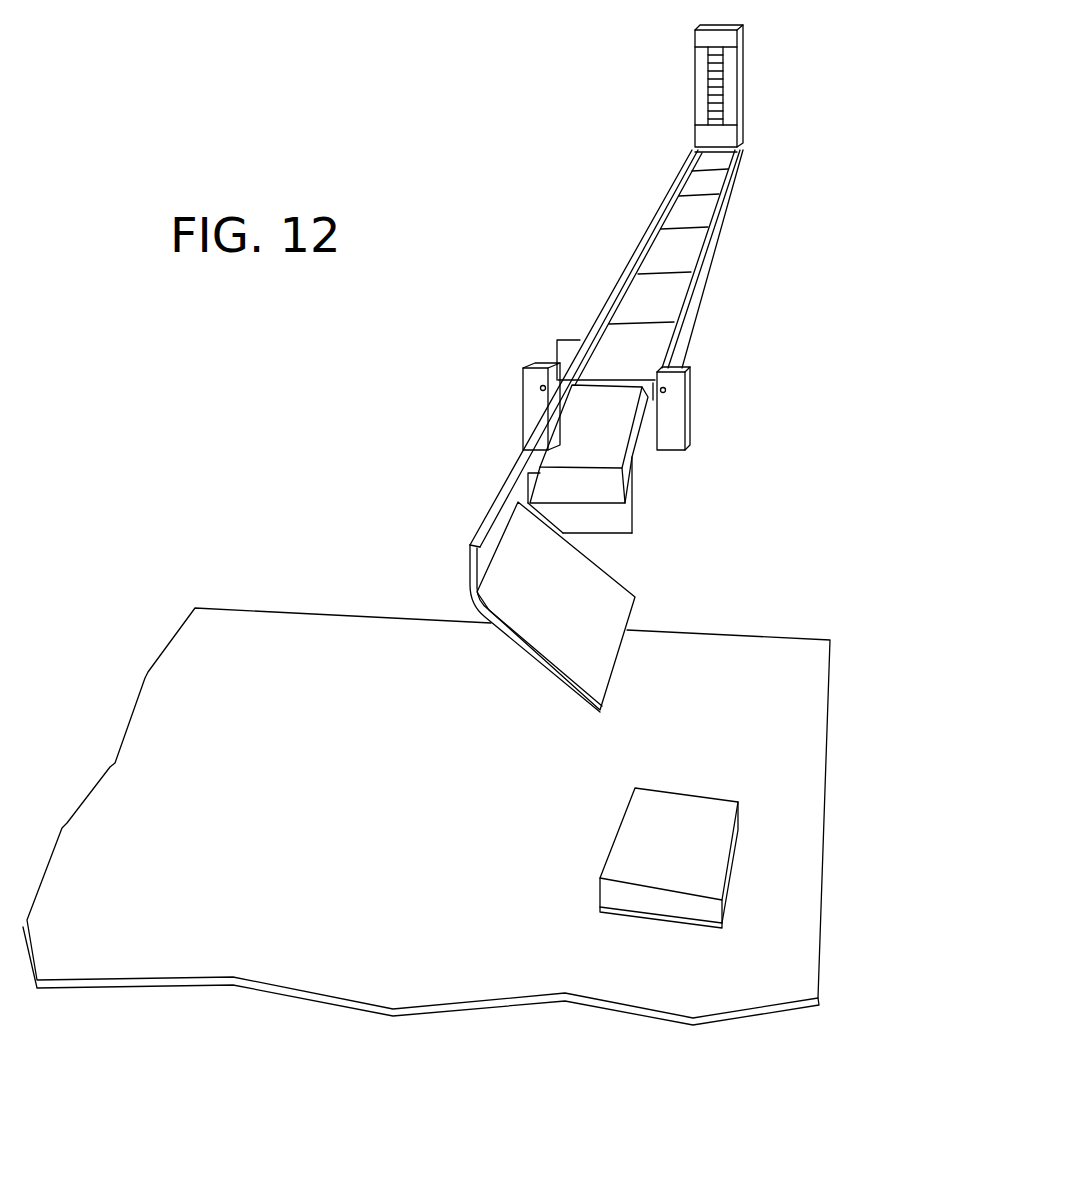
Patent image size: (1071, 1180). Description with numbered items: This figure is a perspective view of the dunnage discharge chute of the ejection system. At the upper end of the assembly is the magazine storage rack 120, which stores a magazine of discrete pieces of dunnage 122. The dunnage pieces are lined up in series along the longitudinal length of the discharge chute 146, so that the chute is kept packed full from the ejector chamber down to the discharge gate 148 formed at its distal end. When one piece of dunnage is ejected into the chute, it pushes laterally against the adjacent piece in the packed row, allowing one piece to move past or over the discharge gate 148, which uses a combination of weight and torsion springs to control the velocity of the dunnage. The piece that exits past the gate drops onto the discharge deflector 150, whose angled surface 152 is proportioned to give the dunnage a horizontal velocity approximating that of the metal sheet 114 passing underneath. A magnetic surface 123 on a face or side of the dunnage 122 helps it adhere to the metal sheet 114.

The metal sheet 114 is at (770, 650).
The magazine storage rack 120 is at (698, 80).
The dunnage 122 is at (667, 258).
The magnetic surface 123 is at (642, 918).
The discharge chute 146 is at (697, 288).
The discharge gate 148 is at (578, 447).
The discharge deflector 150 is at (502, 563).
The angled surface 152 is at (612, 596).